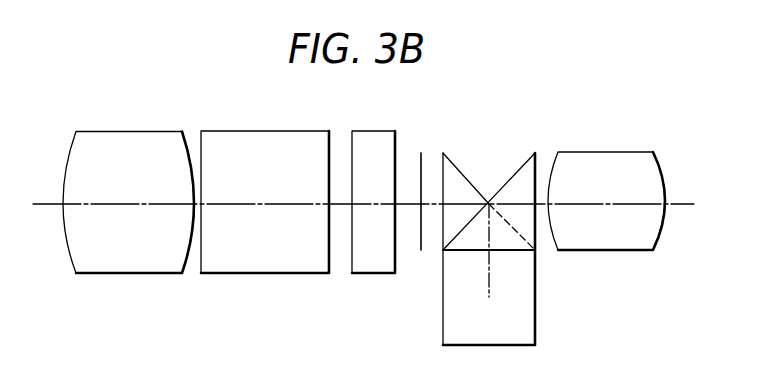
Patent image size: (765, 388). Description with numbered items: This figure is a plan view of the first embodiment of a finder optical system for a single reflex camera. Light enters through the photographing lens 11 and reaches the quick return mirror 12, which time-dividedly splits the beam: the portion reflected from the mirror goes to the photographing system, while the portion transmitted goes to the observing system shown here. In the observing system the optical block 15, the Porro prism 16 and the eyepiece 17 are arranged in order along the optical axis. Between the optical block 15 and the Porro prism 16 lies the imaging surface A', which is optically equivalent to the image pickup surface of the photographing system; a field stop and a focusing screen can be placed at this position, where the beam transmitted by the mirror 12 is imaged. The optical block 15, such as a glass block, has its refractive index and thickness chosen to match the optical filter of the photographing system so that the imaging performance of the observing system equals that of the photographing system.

The photographing lens 11 is at (128, 135).
The quick return mirror 12 is at (255, 133).
The optical block 15 is at (375, 133).
The Porro prism 16 is at (447, 307).
The eyepiece 17 is at (611, 155).
The imaging surface A' A is at (421, 155).